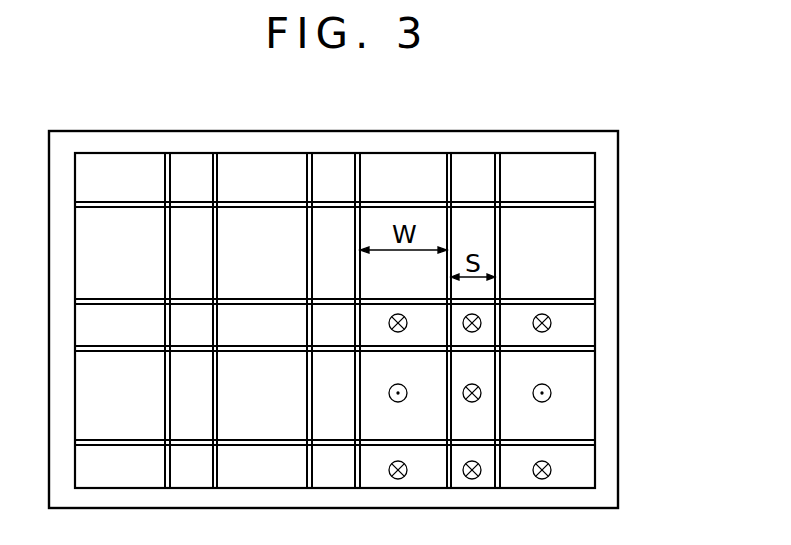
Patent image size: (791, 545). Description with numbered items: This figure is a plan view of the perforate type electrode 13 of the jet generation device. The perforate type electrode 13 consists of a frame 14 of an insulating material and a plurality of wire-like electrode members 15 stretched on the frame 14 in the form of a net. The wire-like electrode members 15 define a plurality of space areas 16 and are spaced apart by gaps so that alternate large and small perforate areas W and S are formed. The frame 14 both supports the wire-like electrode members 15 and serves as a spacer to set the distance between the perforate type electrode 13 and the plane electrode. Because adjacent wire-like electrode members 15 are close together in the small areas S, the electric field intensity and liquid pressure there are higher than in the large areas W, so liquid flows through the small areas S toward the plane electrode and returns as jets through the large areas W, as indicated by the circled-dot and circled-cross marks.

The perforate type electrode 13 is at (556, 127).
The frame 14 is at (610, 268).
The wire-like electrode members 15 is at (165, 230).
The space areas 16 is at (203, 279).